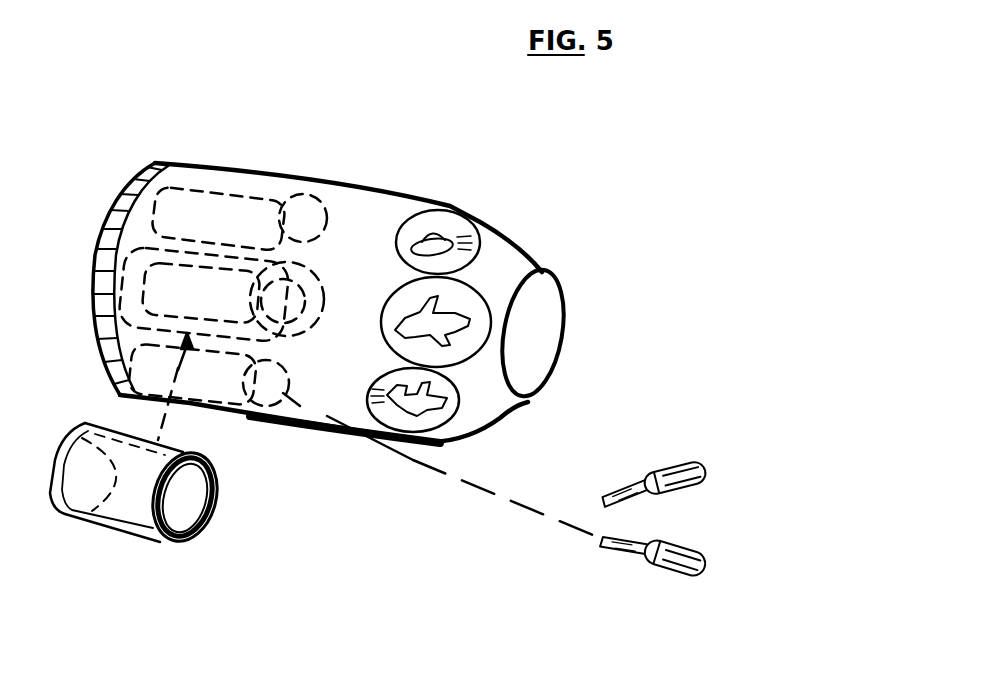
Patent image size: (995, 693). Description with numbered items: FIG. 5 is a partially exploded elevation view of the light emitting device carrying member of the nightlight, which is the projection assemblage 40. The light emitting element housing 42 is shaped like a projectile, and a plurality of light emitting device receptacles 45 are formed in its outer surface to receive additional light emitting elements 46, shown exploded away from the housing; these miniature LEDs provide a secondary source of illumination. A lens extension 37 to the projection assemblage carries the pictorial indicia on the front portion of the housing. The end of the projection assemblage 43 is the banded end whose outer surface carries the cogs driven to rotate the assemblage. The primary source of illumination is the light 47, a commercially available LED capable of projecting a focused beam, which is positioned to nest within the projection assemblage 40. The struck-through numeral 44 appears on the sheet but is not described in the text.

The lens extension to projection assemblage 37 is at (468, 305).
The projection assemblage 40 is at (528, 402).
The light emitting element housing 42 is at (634, 425).
The end of the projection assemblage 43 is at (130, 195).
The reference (struck) 44 is at (238, 80).
The light emitting device receptacles 45 is at (223, 290).
The light emitting elements 46 is at (705, 548).
The light 47 is at (207, 540).